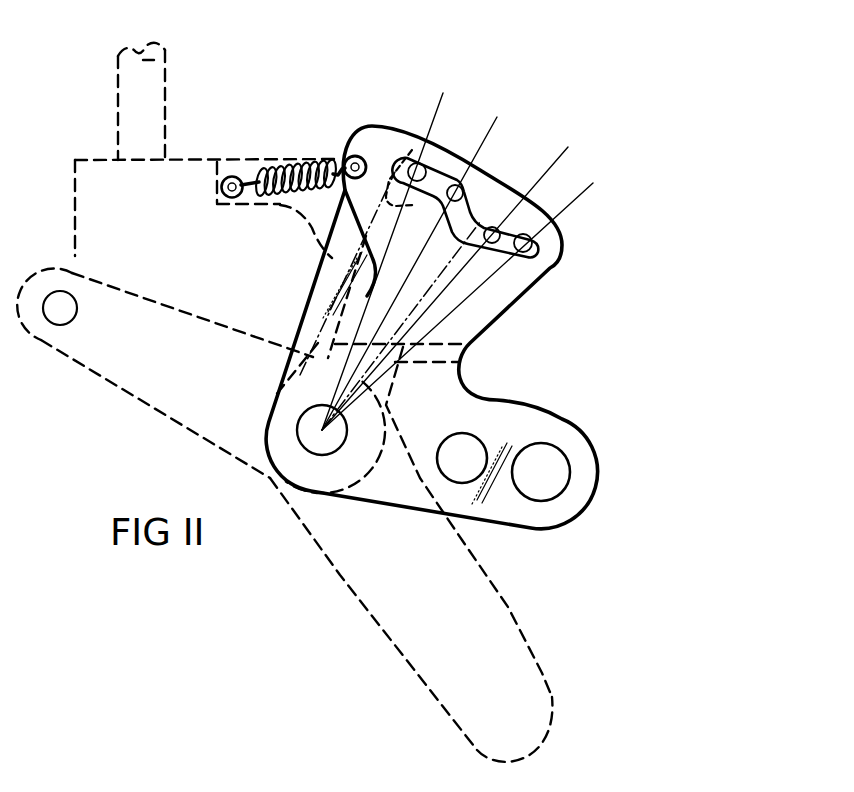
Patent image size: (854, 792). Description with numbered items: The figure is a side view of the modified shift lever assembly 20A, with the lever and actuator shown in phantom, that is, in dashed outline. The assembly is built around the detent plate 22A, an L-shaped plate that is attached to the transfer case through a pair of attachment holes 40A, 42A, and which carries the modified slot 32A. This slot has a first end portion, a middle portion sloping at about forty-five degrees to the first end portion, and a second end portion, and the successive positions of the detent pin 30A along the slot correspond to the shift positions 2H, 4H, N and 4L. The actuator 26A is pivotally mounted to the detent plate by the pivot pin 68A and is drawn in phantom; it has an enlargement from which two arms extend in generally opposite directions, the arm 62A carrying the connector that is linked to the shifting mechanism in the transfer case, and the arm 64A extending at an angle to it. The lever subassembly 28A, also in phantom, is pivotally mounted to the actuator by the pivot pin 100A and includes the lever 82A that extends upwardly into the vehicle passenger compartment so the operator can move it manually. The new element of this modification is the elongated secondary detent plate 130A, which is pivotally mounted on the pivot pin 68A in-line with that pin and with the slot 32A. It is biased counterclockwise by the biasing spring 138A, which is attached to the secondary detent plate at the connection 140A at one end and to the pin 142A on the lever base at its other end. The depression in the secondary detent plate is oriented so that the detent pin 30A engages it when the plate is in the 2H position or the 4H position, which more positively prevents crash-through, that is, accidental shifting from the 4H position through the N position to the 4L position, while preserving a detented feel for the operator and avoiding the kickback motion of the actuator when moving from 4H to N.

The modified shift lever assembly 20A is at (253, 88).
The detent plate 22A is at (498, 396).
The actuator 26A is at (407, 663).
The lever subassembly 28A is at (89, 158).
The detent pin 30A is at (415, 163).
The modified slot 32A is at (478, 209).
The attachment hole 40A is at (452, 439).
The attachment hole 42A is at (531, 449).
The actuator arm 62A is at (383, 587).
The actuator arm 64A is at (160, 373).
The pivot pin 68A is at (300, 437).
The lever 82A is at (118, 73).
The pivot pin 100A is at (57, 326).
The secondary detent plate 130A is at (343, 202).
The biasing spring 138A is at (284, 165).
The connection 140A is at (353, 158).
The pin 142A is at (231, 176).
The 2H position 2H is at (424, 165).
The 4H position 4H is at (463, 189).
The N position N is at (500, 231).
The 4L position 4L is at (533, 240).